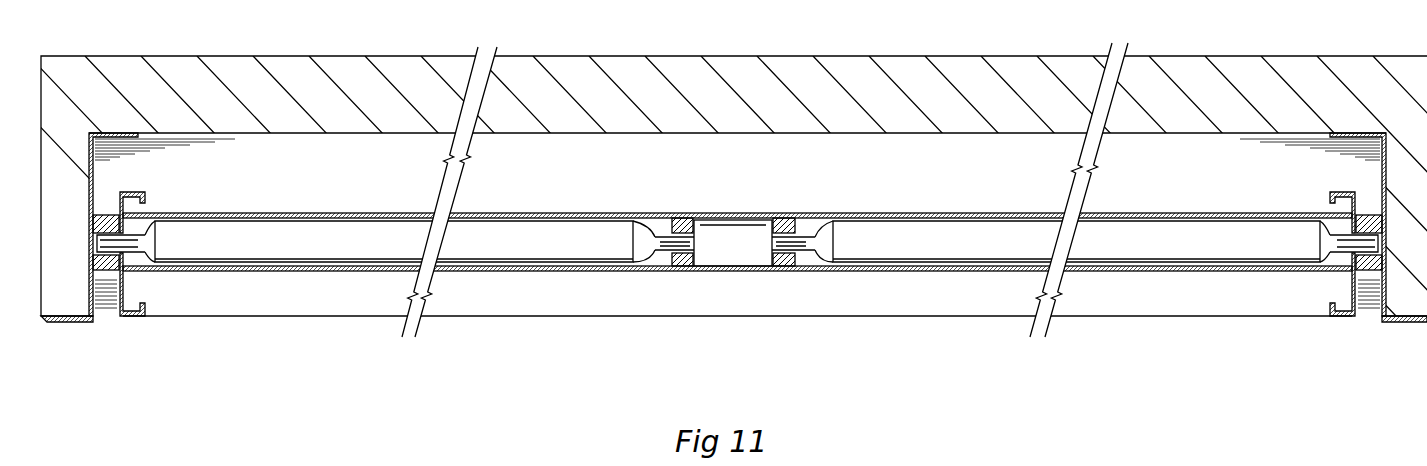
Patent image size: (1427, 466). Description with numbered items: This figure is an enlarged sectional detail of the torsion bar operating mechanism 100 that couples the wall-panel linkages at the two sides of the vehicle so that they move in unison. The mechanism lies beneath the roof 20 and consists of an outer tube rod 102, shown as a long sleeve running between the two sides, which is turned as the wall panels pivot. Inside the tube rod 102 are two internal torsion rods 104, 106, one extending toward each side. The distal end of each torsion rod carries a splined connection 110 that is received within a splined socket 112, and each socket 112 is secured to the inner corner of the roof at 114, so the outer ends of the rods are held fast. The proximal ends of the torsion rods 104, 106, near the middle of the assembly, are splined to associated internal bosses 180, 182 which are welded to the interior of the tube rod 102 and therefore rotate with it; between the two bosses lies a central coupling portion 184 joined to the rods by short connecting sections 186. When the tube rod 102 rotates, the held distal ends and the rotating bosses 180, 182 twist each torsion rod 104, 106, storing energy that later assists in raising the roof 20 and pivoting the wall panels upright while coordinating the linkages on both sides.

The roof 20 is at (302, 57).
The torsion bar operating mechanism 100 is at (500, 291).
The tube rod 102 is at (917, 214).
The torsion rod 104 is at (316, 247).
The torsion rod 106 is at (910, 252).
The splined connection 110 is at (134, 236).
The splined socket 112 is at (108, 272).
The roof inner corner attachment 114 is at (98, 272).
The internal boss 180 is at (783, 218).
The internal boss 182 is at (679, 218).
The central coupling block 184 is at (806, 245).
The connecting tube 186 is at (680, 248).